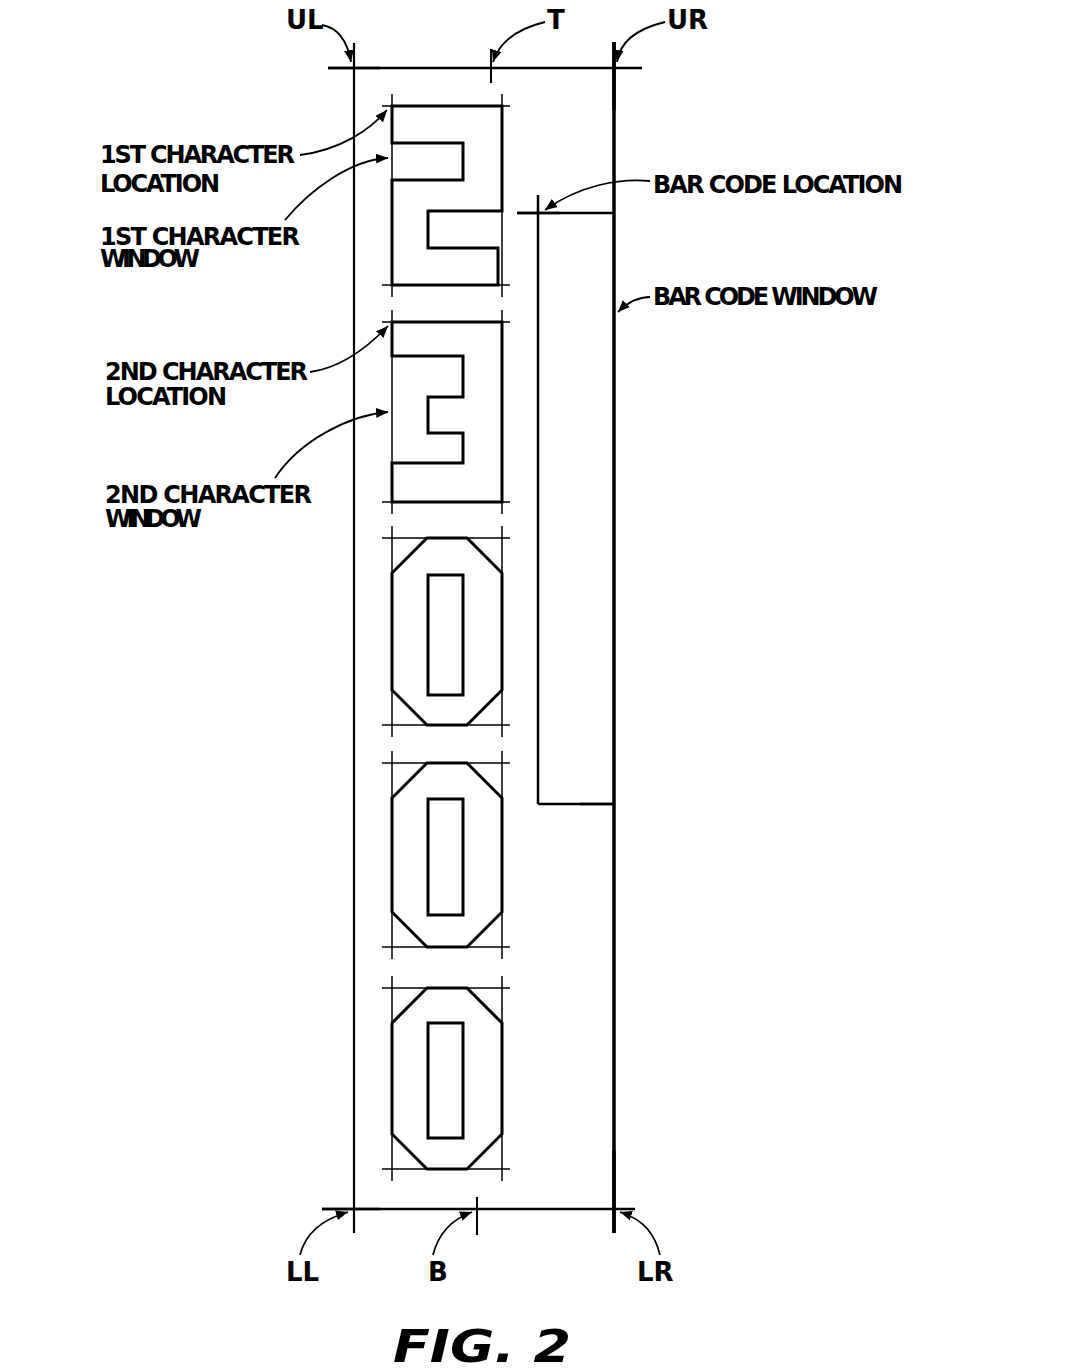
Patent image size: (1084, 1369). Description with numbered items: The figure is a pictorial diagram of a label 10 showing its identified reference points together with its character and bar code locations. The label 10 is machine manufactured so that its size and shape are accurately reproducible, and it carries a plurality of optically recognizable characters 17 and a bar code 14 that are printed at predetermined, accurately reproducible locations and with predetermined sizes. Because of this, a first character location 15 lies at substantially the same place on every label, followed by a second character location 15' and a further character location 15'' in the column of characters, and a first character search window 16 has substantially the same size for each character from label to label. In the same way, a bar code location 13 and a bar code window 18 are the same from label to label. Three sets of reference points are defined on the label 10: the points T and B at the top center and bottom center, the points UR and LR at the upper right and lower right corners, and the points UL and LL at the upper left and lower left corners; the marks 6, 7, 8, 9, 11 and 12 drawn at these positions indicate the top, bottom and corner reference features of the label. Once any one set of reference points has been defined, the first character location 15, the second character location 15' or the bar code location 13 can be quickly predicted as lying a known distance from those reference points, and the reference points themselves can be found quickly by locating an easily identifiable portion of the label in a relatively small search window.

The top reference mark 6 is at (491, 62).
The bottom reference mark 7 is at (480, 1215).
The upper right corner 8 is at (617, 72).
The lower right corner 9 is at (617, 1206).
The label 10 is at (354, 880).
The upper left corner 11 is at (352, 72).
The lower left corner 12 is at (352, 1208).
The bar code location 13 is at (538, 202).
The bar code 14 is at (592, 474).
The first character location 15 is at (446, 184).
The second character location 15' is at (446, 403).
The third character location 15'' is at (446, 613).
The first character search window 16 is at (500, 222).
The optically recognizable character 17 is at (482, 490).
The bar code window 18 is at (604, 816).